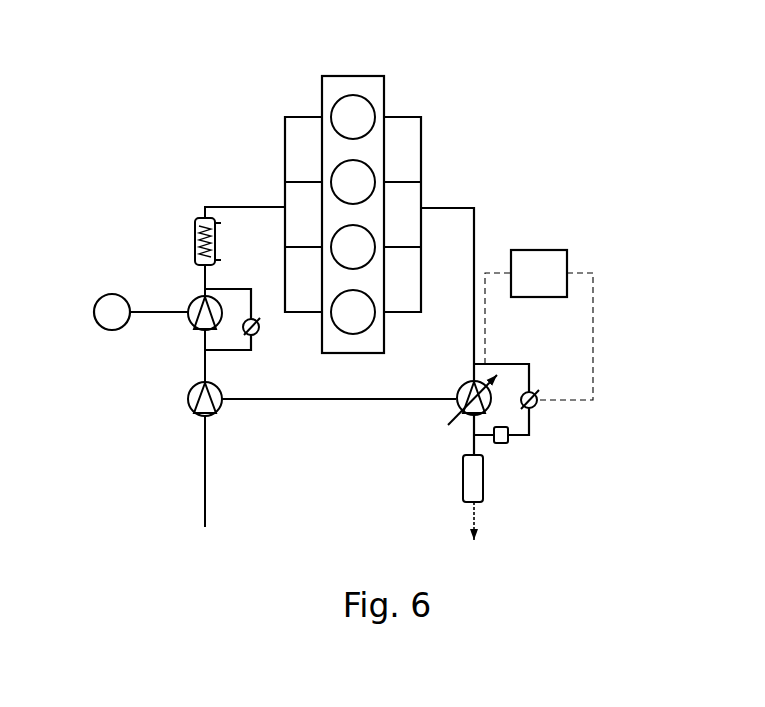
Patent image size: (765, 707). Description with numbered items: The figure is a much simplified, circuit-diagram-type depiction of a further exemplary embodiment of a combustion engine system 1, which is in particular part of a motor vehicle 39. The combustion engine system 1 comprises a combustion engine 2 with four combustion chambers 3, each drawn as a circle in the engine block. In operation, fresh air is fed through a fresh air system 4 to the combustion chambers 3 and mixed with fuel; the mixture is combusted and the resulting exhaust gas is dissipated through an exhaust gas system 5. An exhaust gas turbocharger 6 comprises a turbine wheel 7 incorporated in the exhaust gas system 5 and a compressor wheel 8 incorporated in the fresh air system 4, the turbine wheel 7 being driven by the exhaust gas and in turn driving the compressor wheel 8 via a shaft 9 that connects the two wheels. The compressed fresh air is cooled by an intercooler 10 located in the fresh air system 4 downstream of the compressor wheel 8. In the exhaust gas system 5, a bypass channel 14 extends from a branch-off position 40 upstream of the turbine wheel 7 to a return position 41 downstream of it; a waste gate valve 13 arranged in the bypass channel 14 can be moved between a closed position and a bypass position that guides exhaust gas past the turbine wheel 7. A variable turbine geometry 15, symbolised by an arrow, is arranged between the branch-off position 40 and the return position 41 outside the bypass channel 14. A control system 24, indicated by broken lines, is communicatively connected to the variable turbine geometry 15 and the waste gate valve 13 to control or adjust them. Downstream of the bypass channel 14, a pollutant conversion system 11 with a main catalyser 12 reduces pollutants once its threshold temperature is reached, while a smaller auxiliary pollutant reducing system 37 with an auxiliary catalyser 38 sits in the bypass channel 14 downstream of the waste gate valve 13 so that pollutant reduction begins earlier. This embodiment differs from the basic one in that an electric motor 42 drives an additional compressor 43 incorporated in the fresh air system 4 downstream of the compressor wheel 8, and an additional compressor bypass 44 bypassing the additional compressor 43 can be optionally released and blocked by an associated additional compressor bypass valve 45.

The combustion engine system 1 is at (194, 79).
The combustion engine 2 is at (345, 75).
The combustion chamber 3 is at (347, 127).
The fresh air system 4 is at (160, 130).
The exhaust gas system 5 is at (613, 160).
The exhaust gas turbocharger 6 is at (305, 510).
The turbine wheel 7 is at (458, 392).
The compressor wheel 8 is at (190, 395).
The shaft 9 is at (342, 401).
The intercooler 10 is at (195, 240).
The pollutant conversion system 11 is at (485, 498).
The catalyser 12 is at (463, 488).
The waste gate valve 13 is at (541, 401).
The bypass channel 14 is at (503, 364).
The variable turbine geometry 15 is at (448, 422).
The control system 24 is at (529, 285).
The auxiliary pollutant reducing system 37 is at (506, 452).
The auxiliary catalyser 38 is at (510, 441).
The motor vehicle 39 is at (577, 105).
The branch-off position 40 is at (473, 382).
The return position 41 is at (465, 437).
The electric motor 42 is at (103, 330).
The additional compressor 43 is at (193, 305).
The additional compressor bypass 44 is at (232, 351).
The additional compressor bypass valve 45 is at (260, 334).